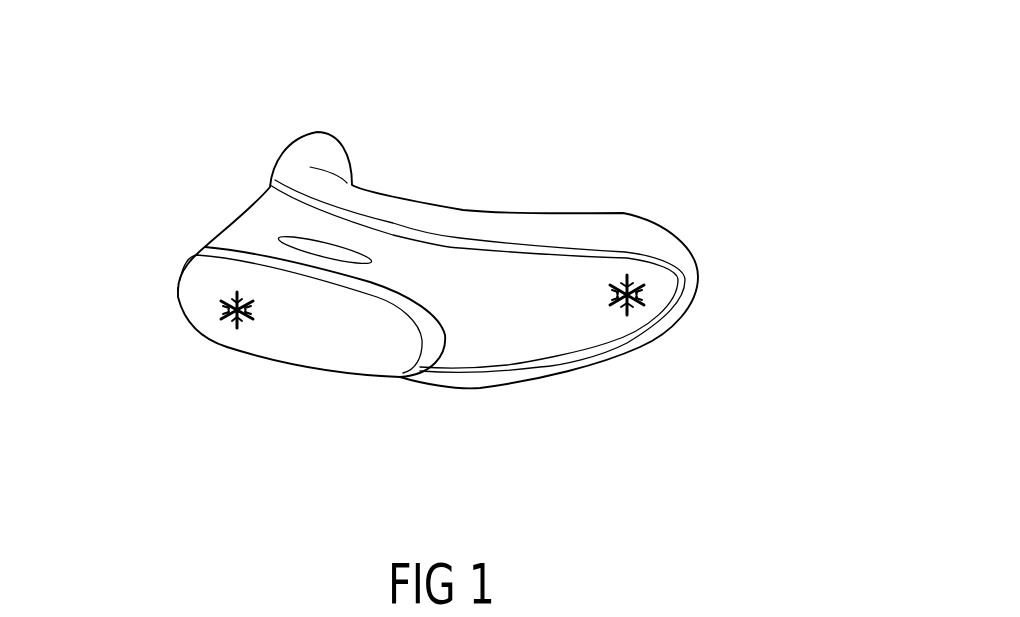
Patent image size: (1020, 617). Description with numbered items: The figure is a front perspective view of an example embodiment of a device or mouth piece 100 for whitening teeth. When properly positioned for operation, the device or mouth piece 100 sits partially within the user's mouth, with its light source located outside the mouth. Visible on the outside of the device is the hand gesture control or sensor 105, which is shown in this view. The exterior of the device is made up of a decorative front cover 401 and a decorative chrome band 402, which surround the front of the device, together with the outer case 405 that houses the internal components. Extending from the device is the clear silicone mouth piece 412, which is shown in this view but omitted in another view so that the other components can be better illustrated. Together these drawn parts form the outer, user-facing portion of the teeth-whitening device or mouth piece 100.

The device or mouth piece 100 is at (181, 47).
The hand gesture control or sensor 105 is at (315, 250).
The decorative front cover 401 is at (202, 318).
The decorative chrome band 402 is at (437, 352).
The outer case 405 is at (553, 325).
The clear silicone mouth piece 412 is at (623, 213).